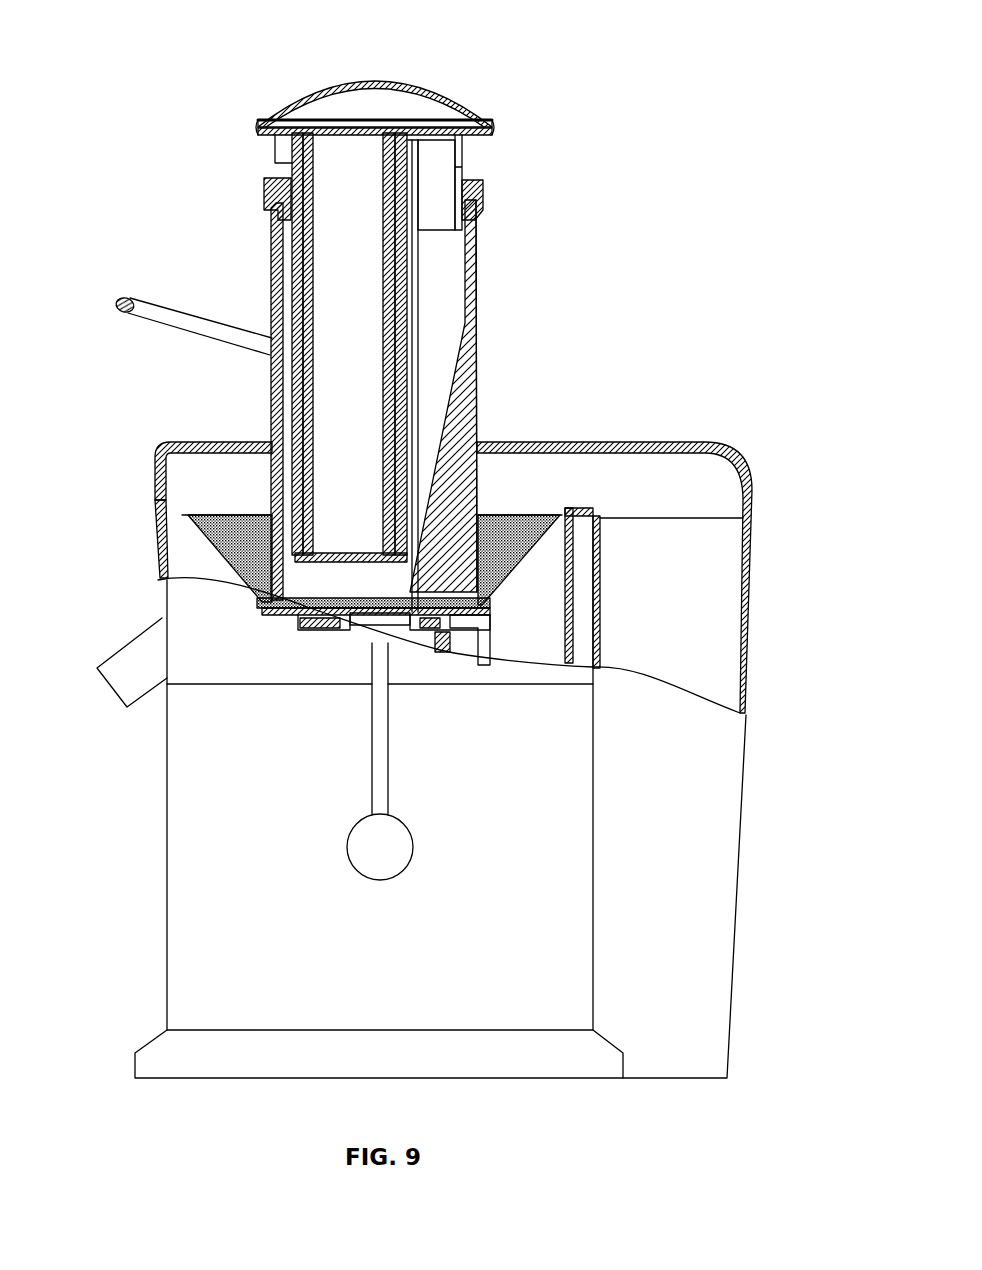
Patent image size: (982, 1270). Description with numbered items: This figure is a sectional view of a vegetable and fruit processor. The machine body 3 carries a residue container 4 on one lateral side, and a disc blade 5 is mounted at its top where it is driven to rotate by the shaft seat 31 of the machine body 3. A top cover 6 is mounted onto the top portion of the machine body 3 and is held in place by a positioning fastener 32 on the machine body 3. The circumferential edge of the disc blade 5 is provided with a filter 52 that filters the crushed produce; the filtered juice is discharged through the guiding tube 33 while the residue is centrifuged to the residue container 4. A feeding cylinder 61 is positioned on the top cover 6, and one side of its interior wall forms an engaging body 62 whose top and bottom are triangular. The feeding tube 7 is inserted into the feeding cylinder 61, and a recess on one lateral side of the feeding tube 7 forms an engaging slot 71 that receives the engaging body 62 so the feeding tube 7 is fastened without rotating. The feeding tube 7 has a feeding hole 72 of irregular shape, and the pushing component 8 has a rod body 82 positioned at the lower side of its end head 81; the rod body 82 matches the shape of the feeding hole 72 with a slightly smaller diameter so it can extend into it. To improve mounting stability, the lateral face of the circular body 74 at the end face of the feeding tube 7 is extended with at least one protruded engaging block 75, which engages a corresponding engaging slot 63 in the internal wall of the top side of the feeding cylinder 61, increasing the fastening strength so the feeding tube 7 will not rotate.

The machine body 3 is at (135, 948).
The shaft seat 31 is at (492, 520).
The positioning fastener 32 is at (175, 327).
The guiding tube 33 is at (130, 653).
The residue container 4 is at (767, 908).
The disc blade 5 is at (202, 488).
The filter 52 is at (243, 517).
The top cover 6 is at (672, 348).
The feeding cylinder 61 is at (478, 418).
The engaging body 62 is at (478, 402).
The engaging slot 63 is at (275, 180).
The feeding tube 7 is at (595, 192).
The engaging slot 71 is at (415, 282).
The feeding hole 72 is at (300, 256).
The circular body 74 is at (268, 117).
The engaging block 75 is at (283, 155).
The pushing component 8 is at (518, 75).
The end head 81 is at (387, 85).
The rod body 82 is at (300, 303).